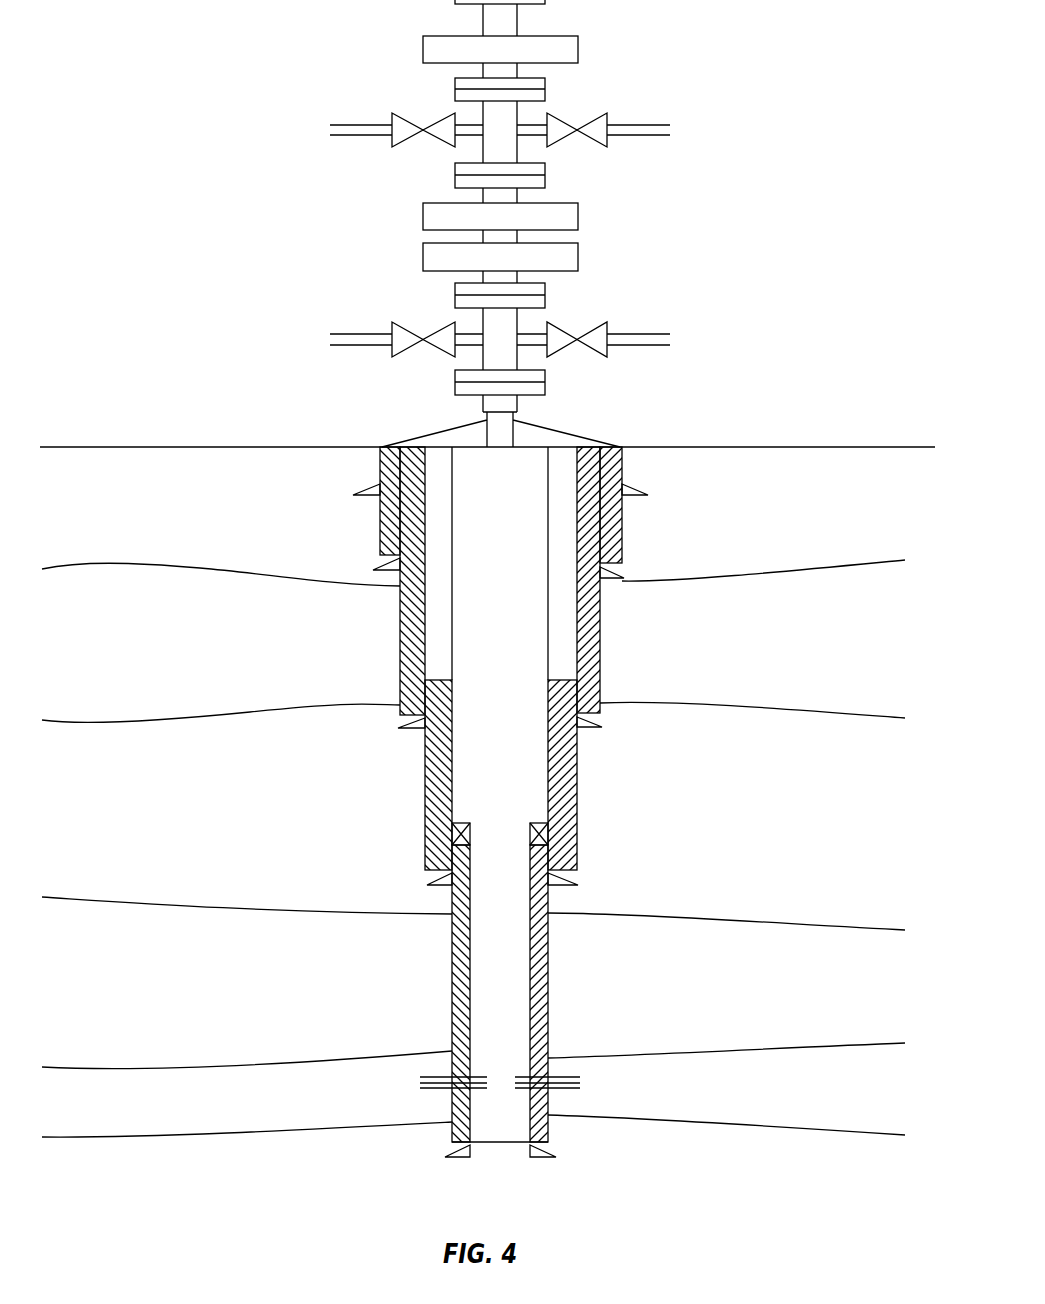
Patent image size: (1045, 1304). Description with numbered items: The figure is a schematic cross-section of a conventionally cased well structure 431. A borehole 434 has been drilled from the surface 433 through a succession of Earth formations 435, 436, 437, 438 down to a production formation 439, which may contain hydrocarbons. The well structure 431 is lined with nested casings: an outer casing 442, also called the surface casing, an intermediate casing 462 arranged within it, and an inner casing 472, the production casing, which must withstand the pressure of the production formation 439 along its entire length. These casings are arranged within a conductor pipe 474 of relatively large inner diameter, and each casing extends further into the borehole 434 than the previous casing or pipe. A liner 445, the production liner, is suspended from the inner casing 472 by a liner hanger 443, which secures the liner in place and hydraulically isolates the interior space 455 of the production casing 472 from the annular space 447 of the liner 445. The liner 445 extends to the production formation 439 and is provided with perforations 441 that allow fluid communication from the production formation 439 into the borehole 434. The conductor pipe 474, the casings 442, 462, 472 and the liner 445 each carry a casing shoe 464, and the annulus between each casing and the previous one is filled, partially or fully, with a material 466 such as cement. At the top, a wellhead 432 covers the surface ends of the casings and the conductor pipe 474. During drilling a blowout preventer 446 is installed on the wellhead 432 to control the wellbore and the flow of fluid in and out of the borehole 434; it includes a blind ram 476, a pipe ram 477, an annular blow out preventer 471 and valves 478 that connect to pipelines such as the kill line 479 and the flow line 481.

The well structure 431 is at (724, 298).
The wellhead 432 is at (531, 468).
The surface 433 is at (332, 446).
The borehole 434 is at (515, 422).
The Earth formation 435 is at (128, 461).
The Earth formation 436 is at (159, 667).
The Earth formation 437 is at (158, 817).
The Earth formation 438 is at (158, 993).
The production formation 439 is at (158, 1124).
The perforations 441 is at (560, 1080).
The outer casing 442 is at (598, 537).
The liner hanger 443 is at (545, 835).
The liner 445 is at (540, 1002).
The blowout preventer 446 is at (232, 184).
The annular space 447 is at (543, 955).
The interior space 455 is at (482, 722).
The intermediate casing 462 is at (578, 628).
The casing shoe 464 is at (624, 567).
The material 466 is at (401, 548).
The annular blow out preventer 471 is at (437, 50).
The inner casing 472 is at (552, 787).
The conductor pipe 474 is at (623, 470).
The blind ram 476 is at (437, 259).
The pipe ram 477 is at (437, 216).
The valves 478 is at (422, 128).
The kill line 479 is at (357, 136).
The flow line 481 is at (641, 136).